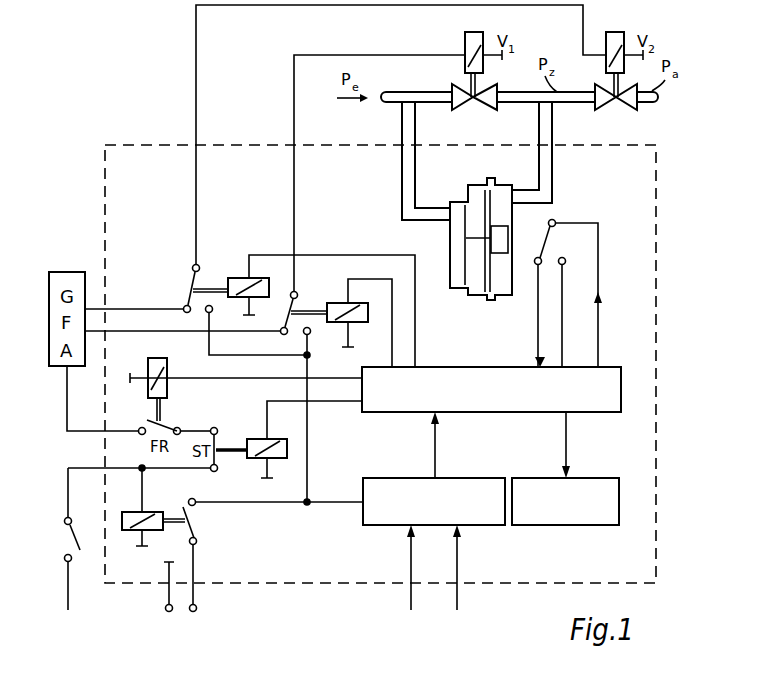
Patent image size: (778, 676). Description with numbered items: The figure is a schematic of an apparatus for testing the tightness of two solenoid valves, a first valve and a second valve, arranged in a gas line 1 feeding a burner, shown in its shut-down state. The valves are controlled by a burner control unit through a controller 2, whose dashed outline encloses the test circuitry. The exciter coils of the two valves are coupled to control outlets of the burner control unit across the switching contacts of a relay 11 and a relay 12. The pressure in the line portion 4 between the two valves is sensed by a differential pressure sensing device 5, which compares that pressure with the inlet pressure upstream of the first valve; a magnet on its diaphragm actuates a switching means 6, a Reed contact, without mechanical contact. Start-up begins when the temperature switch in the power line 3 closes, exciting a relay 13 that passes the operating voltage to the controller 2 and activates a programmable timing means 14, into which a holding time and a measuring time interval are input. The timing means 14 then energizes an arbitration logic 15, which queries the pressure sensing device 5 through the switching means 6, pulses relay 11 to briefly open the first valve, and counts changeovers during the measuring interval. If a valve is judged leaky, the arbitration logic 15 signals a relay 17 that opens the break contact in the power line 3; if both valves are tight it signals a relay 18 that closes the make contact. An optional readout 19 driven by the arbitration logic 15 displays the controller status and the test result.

The gas line 1 is at (424, 104).
The controller 2 is at (147, 144).
The power line 3 is at (82, 467).
The line portion 4 is at (562, 104).
The pressure sensing device 5 is at (450, 246).
The switching means 6 is at (562, 248).
The relay 11 is at (212, 280).
The relay 12 is at (312, 304).
The relay 13 is at (155, 508).
The timing means 14 is at (380, 527).
The arbitration logic 15 is at (522, 413).
The relay 17 is at (264, 438).
The relay 18 is at (168, 386).
The readout 19 is at (585, 527).